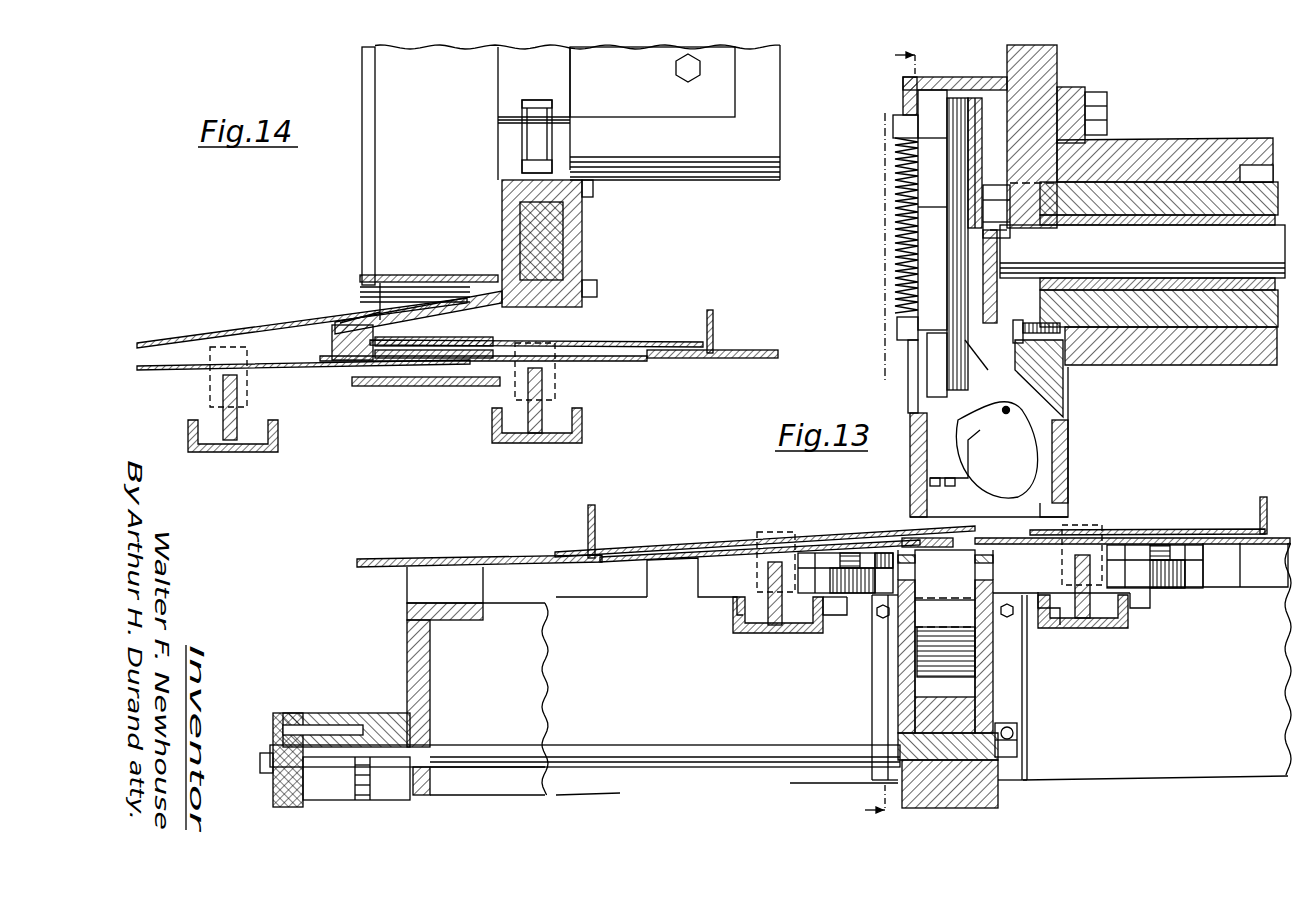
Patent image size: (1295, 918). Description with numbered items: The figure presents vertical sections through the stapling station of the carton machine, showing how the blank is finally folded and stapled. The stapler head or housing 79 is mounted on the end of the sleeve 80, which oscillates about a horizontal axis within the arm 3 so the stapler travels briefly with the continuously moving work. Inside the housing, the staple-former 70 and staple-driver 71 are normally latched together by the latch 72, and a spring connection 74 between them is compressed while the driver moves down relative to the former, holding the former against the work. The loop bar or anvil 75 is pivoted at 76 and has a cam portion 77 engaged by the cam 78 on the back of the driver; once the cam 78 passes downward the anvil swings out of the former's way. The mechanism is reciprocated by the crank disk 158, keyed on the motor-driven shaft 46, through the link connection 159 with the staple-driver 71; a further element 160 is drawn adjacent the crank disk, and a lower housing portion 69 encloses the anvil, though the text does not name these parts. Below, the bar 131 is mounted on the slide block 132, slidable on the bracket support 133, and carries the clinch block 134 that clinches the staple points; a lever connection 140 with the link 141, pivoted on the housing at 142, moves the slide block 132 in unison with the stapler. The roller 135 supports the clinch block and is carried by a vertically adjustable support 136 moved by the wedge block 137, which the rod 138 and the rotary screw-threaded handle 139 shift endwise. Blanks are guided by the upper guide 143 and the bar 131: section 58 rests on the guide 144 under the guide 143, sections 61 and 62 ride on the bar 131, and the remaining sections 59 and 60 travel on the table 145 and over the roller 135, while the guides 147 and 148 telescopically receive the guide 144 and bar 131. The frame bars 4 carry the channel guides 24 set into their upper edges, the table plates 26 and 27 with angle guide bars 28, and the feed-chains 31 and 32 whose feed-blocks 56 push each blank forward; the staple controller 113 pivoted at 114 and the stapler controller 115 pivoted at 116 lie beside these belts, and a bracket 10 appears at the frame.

In FIG. 14, the arm 3 is at (697, 160).
In FIG. 13, the arm 3 is at (1210, 345).
In FIG. 13, the bars 4 is at (560, 778).
In FIG. 13, the bracket 10 is at (890, 56).
In FIG. 13, the channel guides 24 is at (752, 633).
In FIG. 14, the table plate 26 is at (765, 350).
In FIG. 13, the table plate 26 is at (1272, 545).
In FIG. 13, the table plate 27 is at (510, 558).
In FIG. 14, the angle guide bars 28 is at (712, 310).
In FIG. 13, the angle guide bars 28 is at (592, 505).
In FIG. 14, the feed-chain 31 is at (543, 388).
In FIG. 13, the feed-chain 31 is at (1082, 620).
In FIG. 14, the feed-chain 32 is at (222, 396).
In FIG. 13, the feed-chain 32 is at (786, 630).
In FIG. 13, the shaft 46 is at (1190, 254).
In FIG. 14, the feed-blocks 56 is at (214, 350).
In FIG. 13, the feed-blocks 56 is at (760, 540).
In FIG. 14, the side-wall section 58 is at (302, 323).
In FIG. 13, the side-wall section 58 is at (858, 549).
In FIG. 14, the side-wall section 59 is at (285, 367).
In FIG. 13, the side-wall section 59 is at (745, 556).
In FIG. 14, the side-wall section 60 is at (620, 358).
In FIG. 14, the side-wall section 61 is at (628, 336).
In FIG. 13, the side-wall section 61 is at (1165, 524).
In FIG. 14, the flap section 62 is at (403, 335).
In FIG. 13, the flap section 62 is at (905, 520).
In FIG. 14, the housing 69 is at (360, 171).
In FIG. 13, the housing 69 is at (906, 425).
In FIG. 13, the staple-former 70 is at (935, 348).
In FIG. 13, the staple-driver 71 is at (960, 298).
In FIG. 13, the latch 72 is at (898, 244).
In FIG. 13, the spring connection 74 is at (898, 285).
In FIG. 13, the anvil 75 is at (970, 490).
In FIG. 13, the pivot 76 is at (1010, 410).
In FIG. 13, the cam portion 77 is at (997, 387).
In FIG. 13, the cam 78 is at (983, 348).
In FIG. 13, the stapler head or housing 79 is at (1030, 50).
In FIG. 13, the sleeve 80 is at (1212, 195).
In FIG. 13, the staple controller 113 is at (1178, 575).
In FIG. 13, the pivot 114 is at (1170, 545).
In FIG. 13, the stapler controller 115 is at (860, 590).
In FIG. 13, the pivot 116 is at (860, 560).
In FIG. 14, the bar 131 is at (346, 358).
In FIG. 13, the bar 131 is at (915, 538).
In FIG. 14, the slide block 132 is at (503, 186).
In FIG. 14, the bracket support 133 is at (552, 233).
In FIG. 13, the clinch block 134 is at (945, 575).
In FIG. 13, the roller 135 is at (940, 630).
In FIG. 13, the vertically adjustable support 136 is at (898, 698).
In FIG. 13, the wedge block 137 is at (1012, 730).
In FIG. 13, the rod 138 is at (660, 748).
In FIG. 13, the screw-threaded handle 139 is at (330, 725).
In FIG. 14, the lever connection 140 is at (553, 97).
In FIG. 13, the link 141 is at (1065, 88).
In FIG. 13, the pivot 142 is at (1096, 92).
In FIG. 14, the upper guide 143 is at (375, 292).
In FIG. 14, the guide 144 is at (435, 320).
In FIG. 14, the table 145 is at (426, 386).
In FIG. 14, the guide 147 is at (370, 320).
In FIG. 14, the guide 148 is at (392, 350).
In FIG. 13, the crank disk 158 is at (1085, 120).
In FIG. 13, the link connection 159 is at (990, 180).
In FIG. 13, the screw 160 is at (1090, 130).